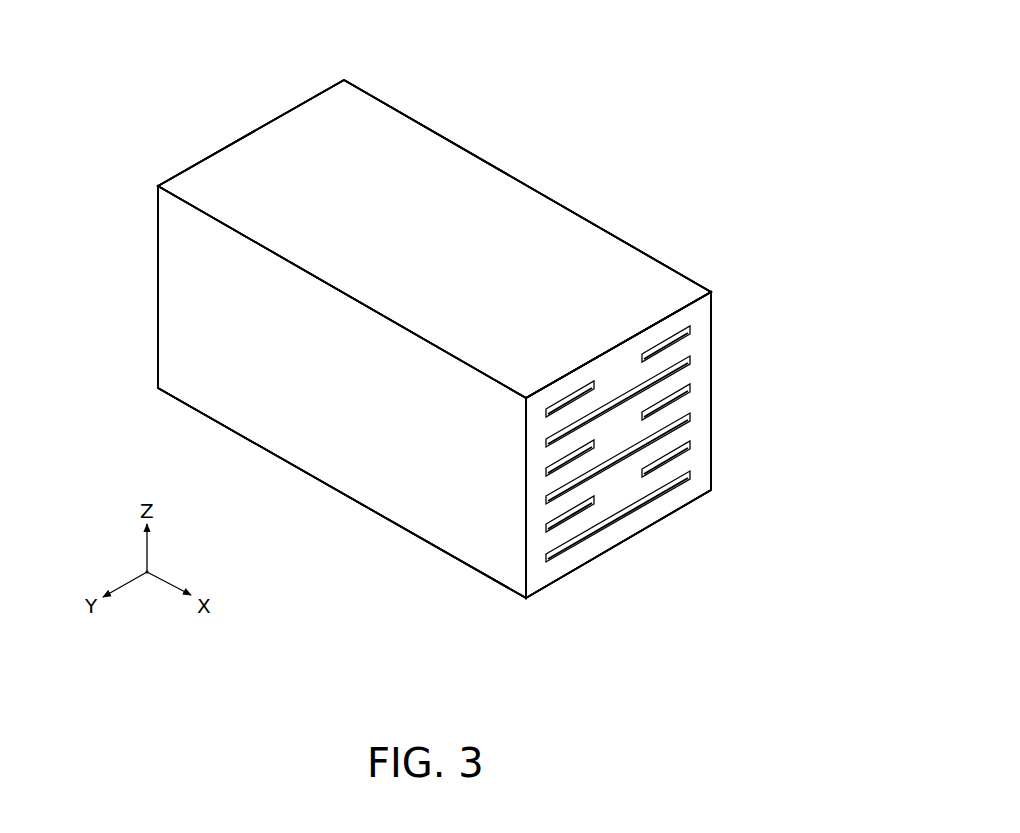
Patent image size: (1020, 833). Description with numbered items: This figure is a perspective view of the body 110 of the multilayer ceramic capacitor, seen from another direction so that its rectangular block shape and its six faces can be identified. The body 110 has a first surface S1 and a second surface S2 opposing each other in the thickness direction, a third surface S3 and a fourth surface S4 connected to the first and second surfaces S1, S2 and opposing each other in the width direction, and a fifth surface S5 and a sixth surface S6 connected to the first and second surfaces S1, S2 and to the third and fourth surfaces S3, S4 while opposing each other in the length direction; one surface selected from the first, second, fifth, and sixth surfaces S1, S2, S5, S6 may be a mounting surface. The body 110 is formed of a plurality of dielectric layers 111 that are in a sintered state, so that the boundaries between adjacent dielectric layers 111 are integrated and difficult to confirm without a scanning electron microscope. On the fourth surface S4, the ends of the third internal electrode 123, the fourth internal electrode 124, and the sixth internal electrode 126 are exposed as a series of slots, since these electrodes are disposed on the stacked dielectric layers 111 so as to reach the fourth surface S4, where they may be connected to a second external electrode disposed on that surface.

The body 110 is at (681, 31).
The dielectric layers 111 is at (700, 373).
The third internal electrode 123 is at (546, 413).
The fourth internal electrode 124 is at (691, 330).
The sixth internal electrode 126 is at (691, 360).
The first surface S1 is at (420, 177).
The second surface S2 is at (397, 530).
The third surface S3 is at (240, 132).
The fourth surface S4 is at (618, 447).
The fifth surface S5 is at (285, 423).
The sixth surface S6 is at (596, 218).